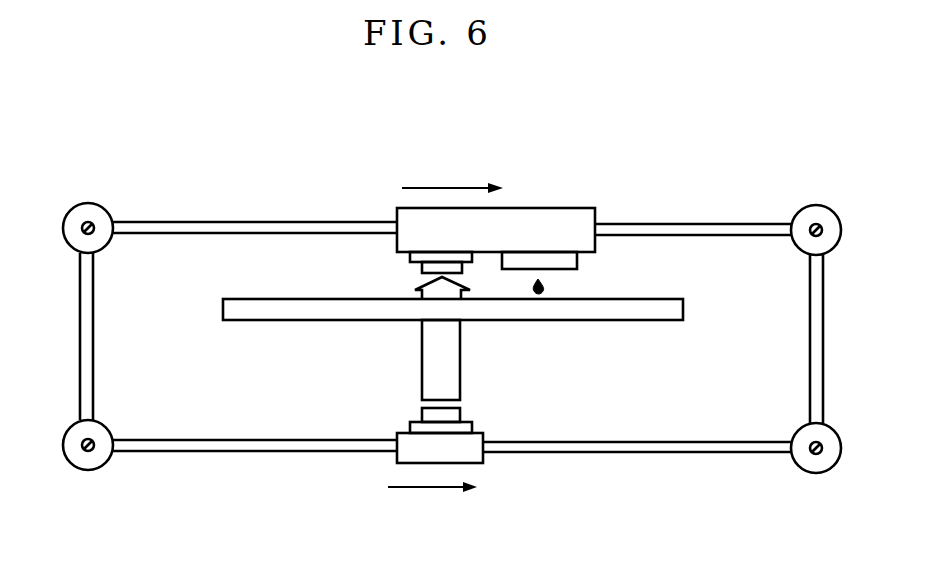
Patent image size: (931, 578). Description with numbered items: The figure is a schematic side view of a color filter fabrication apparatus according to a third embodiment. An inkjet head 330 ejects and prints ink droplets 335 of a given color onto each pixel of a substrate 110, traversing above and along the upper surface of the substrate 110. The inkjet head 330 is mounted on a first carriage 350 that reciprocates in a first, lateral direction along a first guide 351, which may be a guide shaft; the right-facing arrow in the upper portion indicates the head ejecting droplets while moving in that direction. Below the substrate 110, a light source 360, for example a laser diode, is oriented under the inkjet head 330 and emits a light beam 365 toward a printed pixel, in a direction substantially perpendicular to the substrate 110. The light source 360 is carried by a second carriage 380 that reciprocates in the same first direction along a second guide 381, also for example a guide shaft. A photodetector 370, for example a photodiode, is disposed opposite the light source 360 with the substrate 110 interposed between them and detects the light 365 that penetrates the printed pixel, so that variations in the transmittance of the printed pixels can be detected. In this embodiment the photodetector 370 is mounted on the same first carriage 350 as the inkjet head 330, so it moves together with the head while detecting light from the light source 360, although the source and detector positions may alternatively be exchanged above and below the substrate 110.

The substrate 110 is at (644, 322).
The inkjet head 330 is at (578, 263).
The ink droplets 335 is at (548, 289).
The first carriage 350 is at (566, 218).
The first guide 351 is at (707, 233).
The light source 360 is at (410, 423).
The light beam 365 is at (456, 362).
The photodetector 370 is at (409, 263).
The second carriage 380 is at (477, 463).
The second guide 381 is at (688, 453).